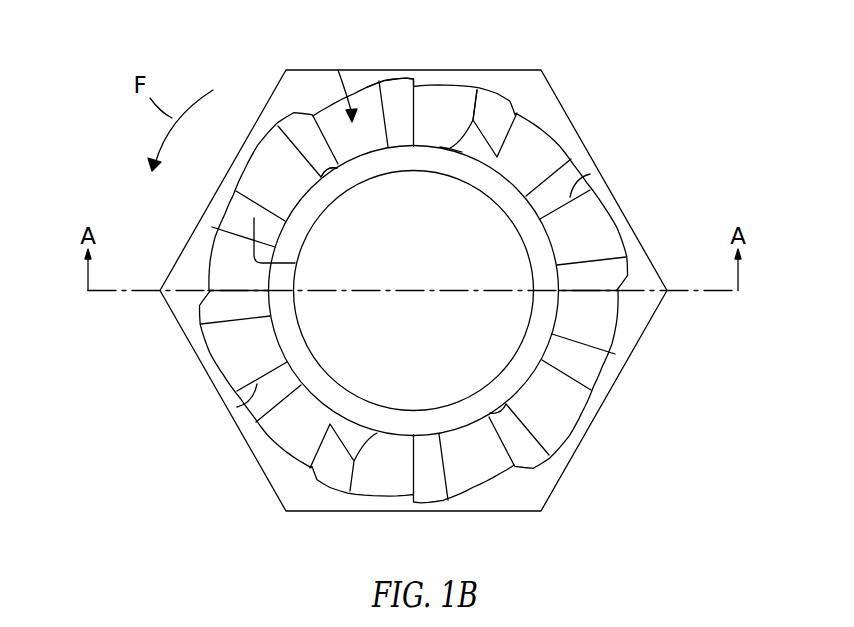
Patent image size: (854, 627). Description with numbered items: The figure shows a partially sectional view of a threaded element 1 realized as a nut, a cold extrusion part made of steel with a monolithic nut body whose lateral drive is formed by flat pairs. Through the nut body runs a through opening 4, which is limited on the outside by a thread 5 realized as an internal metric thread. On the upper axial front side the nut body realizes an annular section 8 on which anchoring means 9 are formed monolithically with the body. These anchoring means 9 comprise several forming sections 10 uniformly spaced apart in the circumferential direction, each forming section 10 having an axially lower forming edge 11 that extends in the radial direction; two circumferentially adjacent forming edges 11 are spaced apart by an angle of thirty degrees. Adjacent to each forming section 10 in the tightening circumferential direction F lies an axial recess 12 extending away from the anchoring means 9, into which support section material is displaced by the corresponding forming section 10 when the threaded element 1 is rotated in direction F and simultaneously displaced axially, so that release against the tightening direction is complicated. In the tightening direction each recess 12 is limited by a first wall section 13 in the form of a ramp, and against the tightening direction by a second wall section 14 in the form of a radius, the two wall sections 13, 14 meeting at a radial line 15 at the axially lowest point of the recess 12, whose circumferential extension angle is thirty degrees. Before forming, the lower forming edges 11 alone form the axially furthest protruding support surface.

The threaded element 1 is at (646, 196).
The through opening 4 is at (475, 262).
The thread 5 is at (540, 264).
The annular section 8 is at (523, 147).
The anchoring means 9 is at (345, 75).
The forming section 10 is at (292, 128).
The forming edge 11 is at (477, 90).
The axial recess 12 is at (295, 263).
The first wall section 13 is at (428, 113).
The second wall section 14 is at (495, 113).
The radial line 15 is at (447, 150).